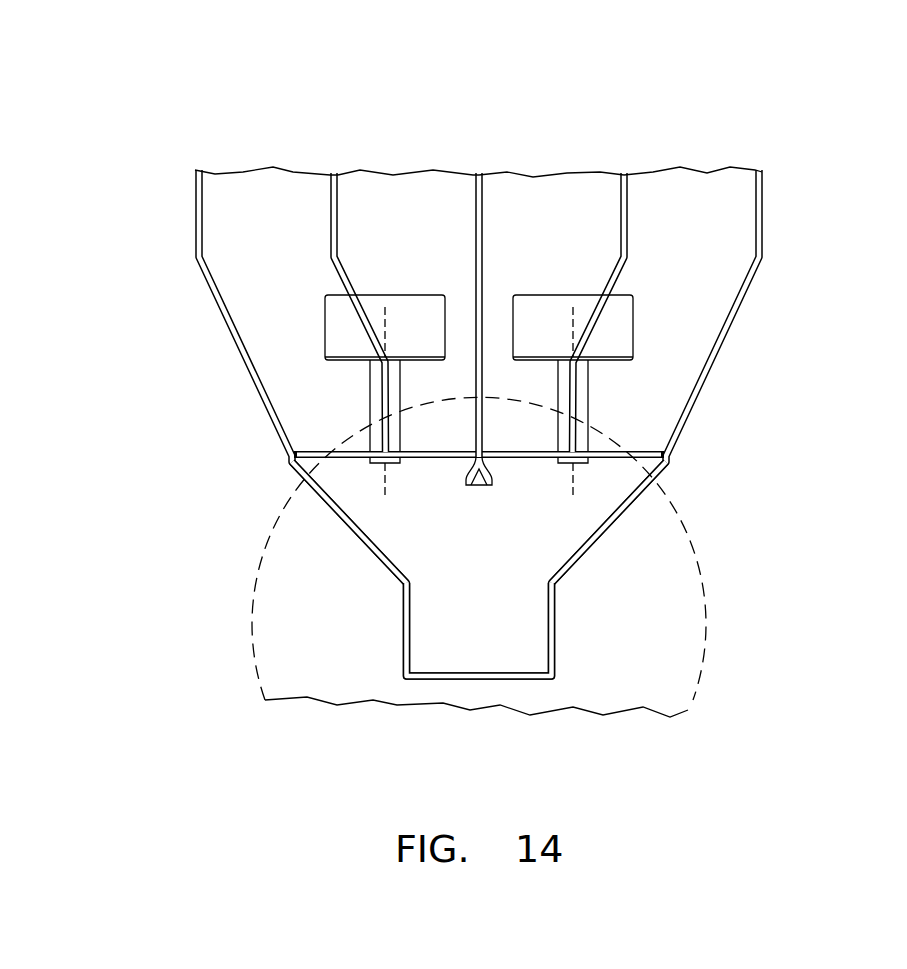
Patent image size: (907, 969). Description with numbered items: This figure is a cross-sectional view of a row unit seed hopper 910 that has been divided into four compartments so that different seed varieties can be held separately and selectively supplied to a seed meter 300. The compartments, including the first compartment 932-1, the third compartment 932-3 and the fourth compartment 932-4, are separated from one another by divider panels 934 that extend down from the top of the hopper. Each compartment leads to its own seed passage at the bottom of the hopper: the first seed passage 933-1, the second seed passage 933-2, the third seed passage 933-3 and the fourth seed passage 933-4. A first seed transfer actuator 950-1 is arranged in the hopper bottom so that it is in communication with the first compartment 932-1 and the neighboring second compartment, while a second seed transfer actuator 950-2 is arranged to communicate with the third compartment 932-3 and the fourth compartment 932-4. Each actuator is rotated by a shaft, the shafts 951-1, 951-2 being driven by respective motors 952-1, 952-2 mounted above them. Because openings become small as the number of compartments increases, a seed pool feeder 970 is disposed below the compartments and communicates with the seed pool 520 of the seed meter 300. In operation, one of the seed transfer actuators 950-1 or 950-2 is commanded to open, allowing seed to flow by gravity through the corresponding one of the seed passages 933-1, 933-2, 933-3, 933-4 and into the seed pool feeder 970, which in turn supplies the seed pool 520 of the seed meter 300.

The row unit seed hopper 910 is at (196, 232).
The divider panel 934 is at (333, 205).
The first compartment 932-1 is at (235, 220).
The third compartment 932-3 is at (577, 220).
The fourth compartment 932-4 is at (710, 210).
The motor 952-1 is at (325, 315).
The motor 952-2 is at (624, 305).
The shaft 951-1 is at (376, 380).
The shaft 951-2 is at (582, 383).
The first seed passage 933-1 is at (325, 442).
The second seed passage 933-2 is at (423, 450).
The third seed passage 933-3 is at (537, 448).
The fourth seed passage 933-4 is at (636, 447).
The first seed transfer actuator 950-1 is at (301, 470).
The second seed transfer actuator 950-2 is at (668, 473).
The seed pool feeder 970 is at (405, 530).
The seed pool 520 is at (527, 643).
The seed meter 300 is at (678, 628).